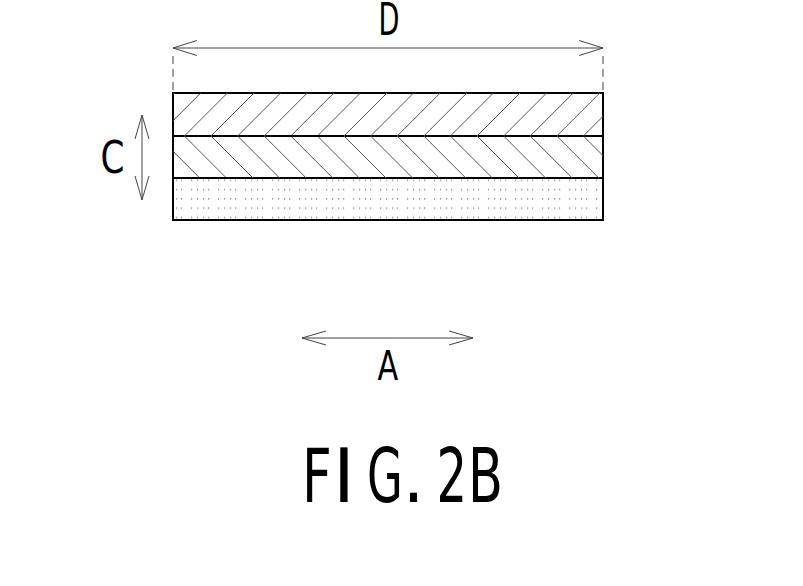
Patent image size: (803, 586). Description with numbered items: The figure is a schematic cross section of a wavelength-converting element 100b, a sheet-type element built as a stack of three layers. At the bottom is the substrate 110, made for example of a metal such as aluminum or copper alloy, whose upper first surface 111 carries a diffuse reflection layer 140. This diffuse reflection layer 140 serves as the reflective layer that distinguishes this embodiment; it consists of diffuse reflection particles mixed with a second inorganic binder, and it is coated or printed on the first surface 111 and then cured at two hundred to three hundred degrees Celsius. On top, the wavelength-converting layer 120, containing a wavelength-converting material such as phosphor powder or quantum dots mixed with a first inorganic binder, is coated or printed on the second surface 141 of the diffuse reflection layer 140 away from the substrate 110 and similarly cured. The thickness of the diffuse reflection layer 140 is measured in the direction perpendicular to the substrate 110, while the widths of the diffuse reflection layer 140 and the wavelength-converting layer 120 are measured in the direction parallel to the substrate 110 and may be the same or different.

The wavelength-converting element 100b is at (133, 38).
The substrate 110 is at (593, 200).
The first surface 111 is at (216, 179).
The wavelength-converting layer 120 is at (593, 115).
The diffuse reflection layer 140 is at (593, 158).
The second surface 141 is at (302, 137).